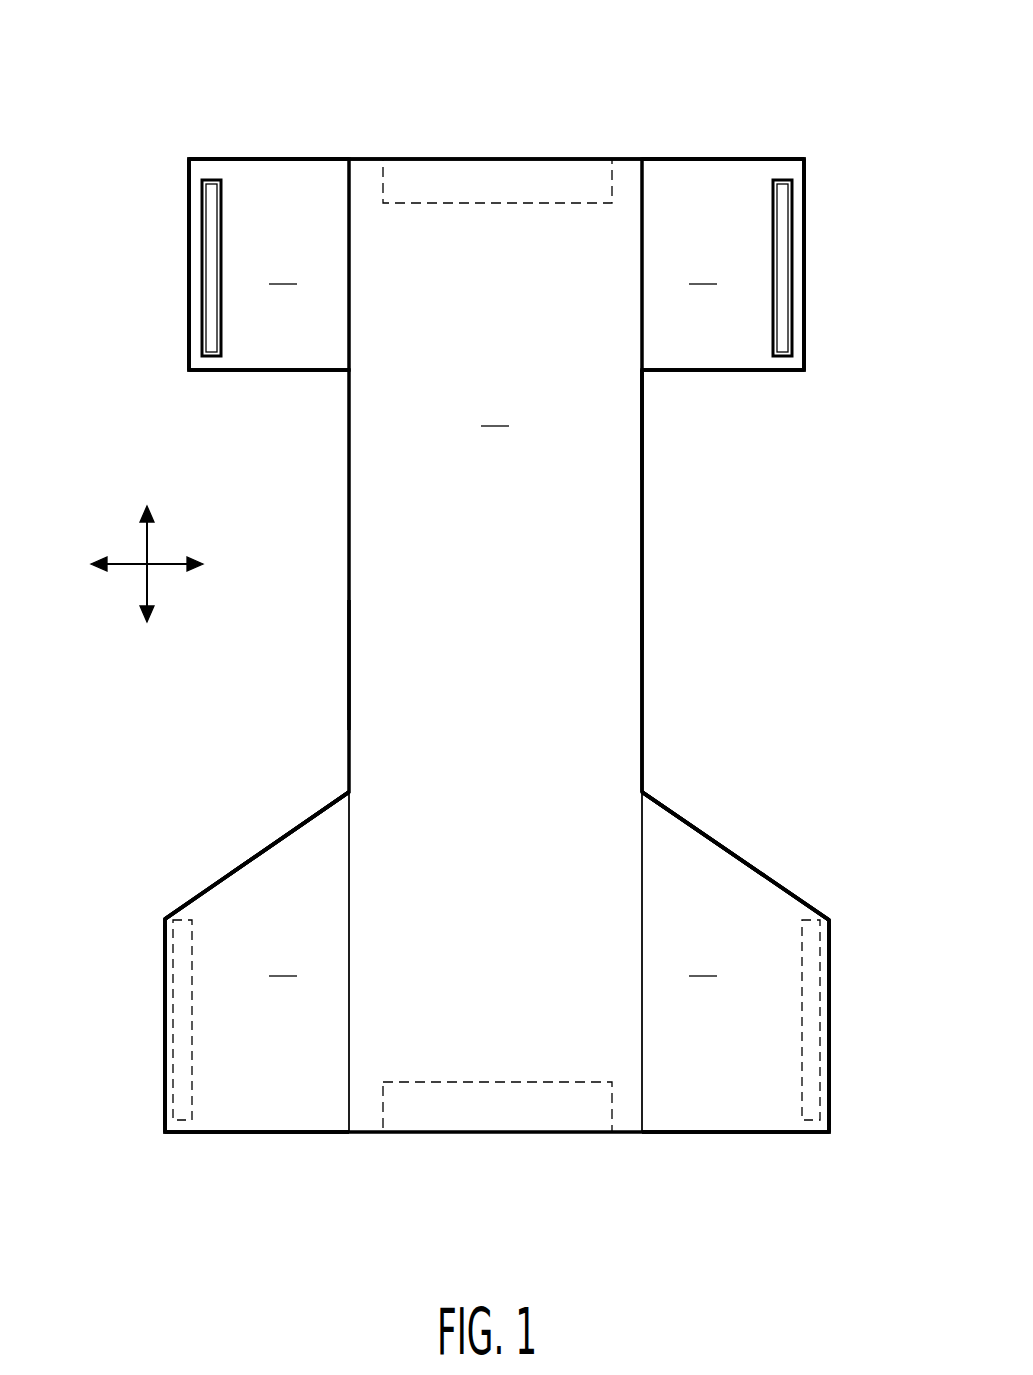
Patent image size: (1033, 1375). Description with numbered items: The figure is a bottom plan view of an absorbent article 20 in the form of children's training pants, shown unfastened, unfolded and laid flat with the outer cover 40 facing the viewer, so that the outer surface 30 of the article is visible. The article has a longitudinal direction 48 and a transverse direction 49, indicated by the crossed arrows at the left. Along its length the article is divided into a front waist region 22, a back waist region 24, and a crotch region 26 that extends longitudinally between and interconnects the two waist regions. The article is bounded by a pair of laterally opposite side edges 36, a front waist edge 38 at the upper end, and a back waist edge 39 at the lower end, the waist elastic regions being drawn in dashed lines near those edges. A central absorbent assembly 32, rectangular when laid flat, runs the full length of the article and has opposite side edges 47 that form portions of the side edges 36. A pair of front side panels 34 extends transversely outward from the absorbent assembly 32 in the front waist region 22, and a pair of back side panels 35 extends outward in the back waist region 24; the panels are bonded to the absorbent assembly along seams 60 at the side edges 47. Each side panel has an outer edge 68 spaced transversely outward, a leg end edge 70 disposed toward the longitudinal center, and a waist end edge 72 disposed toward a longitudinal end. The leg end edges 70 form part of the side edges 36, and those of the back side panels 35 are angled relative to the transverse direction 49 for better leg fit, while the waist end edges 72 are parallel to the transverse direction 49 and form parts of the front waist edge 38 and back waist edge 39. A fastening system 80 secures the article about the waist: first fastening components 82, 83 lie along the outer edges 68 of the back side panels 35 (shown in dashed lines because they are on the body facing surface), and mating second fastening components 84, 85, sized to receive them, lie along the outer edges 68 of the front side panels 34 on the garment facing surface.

The absorbent article 20 is at (288, 63).
The front waist region 22 is at (820, 324).
The back waist region 24 is at (320, 780).
The crotch region 26 is at (612, 578).
The outer surface 30 is at (495, 645).
The central absorbent assembly 32 is at (613, 775).
The front side panels 34 is at (496, 264).
The back side panels 35 is at (497, 962).
The side edges 36 is at (645, 420).
The front waist edge 38 is at (493, 159).
The back waist edge 39 is at (420, 1132).
The outer cover 40 is at (349, 530).
The side edges of the absorbent assembly 47 is at (645, 628).
The longitudinal direction 48 is at (147, 540).
The transverse direction 49 is at (160, 568).
The seams 60 is at (350, 244).
The outer edge 68 is at (805, 178).
The leg end edge 70 is at (265, 370).
The waist end edge 72 is at (245, 159).
The fastening system 80 is at (148, 198).
The first fastening component 82 is at (178, 956).
The first fastening component 83 is at (819, 1001).
The second fastening component 84 is at (211, 253).
The second fastening component 85 is at (785, 220).